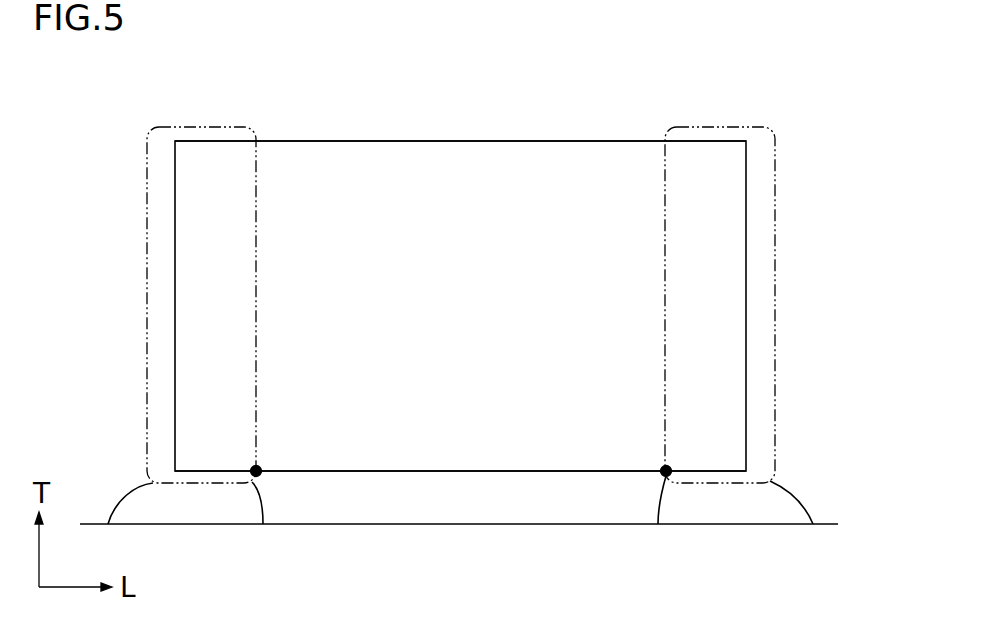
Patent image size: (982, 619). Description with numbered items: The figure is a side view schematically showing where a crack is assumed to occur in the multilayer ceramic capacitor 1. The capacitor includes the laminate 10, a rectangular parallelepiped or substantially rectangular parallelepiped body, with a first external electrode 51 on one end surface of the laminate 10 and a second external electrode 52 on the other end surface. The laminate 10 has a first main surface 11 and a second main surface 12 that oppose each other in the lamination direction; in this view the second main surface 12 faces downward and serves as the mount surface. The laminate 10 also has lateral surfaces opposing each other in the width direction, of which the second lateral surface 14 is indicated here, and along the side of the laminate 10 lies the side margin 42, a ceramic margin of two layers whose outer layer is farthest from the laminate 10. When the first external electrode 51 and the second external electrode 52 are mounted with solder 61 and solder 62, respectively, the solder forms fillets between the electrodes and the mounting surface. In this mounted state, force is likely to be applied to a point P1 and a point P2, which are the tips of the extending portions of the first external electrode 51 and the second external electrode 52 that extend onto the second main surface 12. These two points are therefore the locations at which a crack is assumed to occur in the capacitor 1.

The multilayer ceramic capacitor 1 is at (74, 108).
The laminate 10 is at (538, 132).
The first main surface 11 is at (398, 141).
The second main surface 12 is at (438, 471).
The second lateral surface 14 is at (390, 440).
The side margin 42 is at (537, 440).
The first external electrode 51 is at (160, 137).
The second external electrode 52 is at (760, 137).
The solder 61 is at (227, 513).
The solder 62 is at (703, 513).
The point P1 is at (272, 456).
The point P2 is at (650, 456).